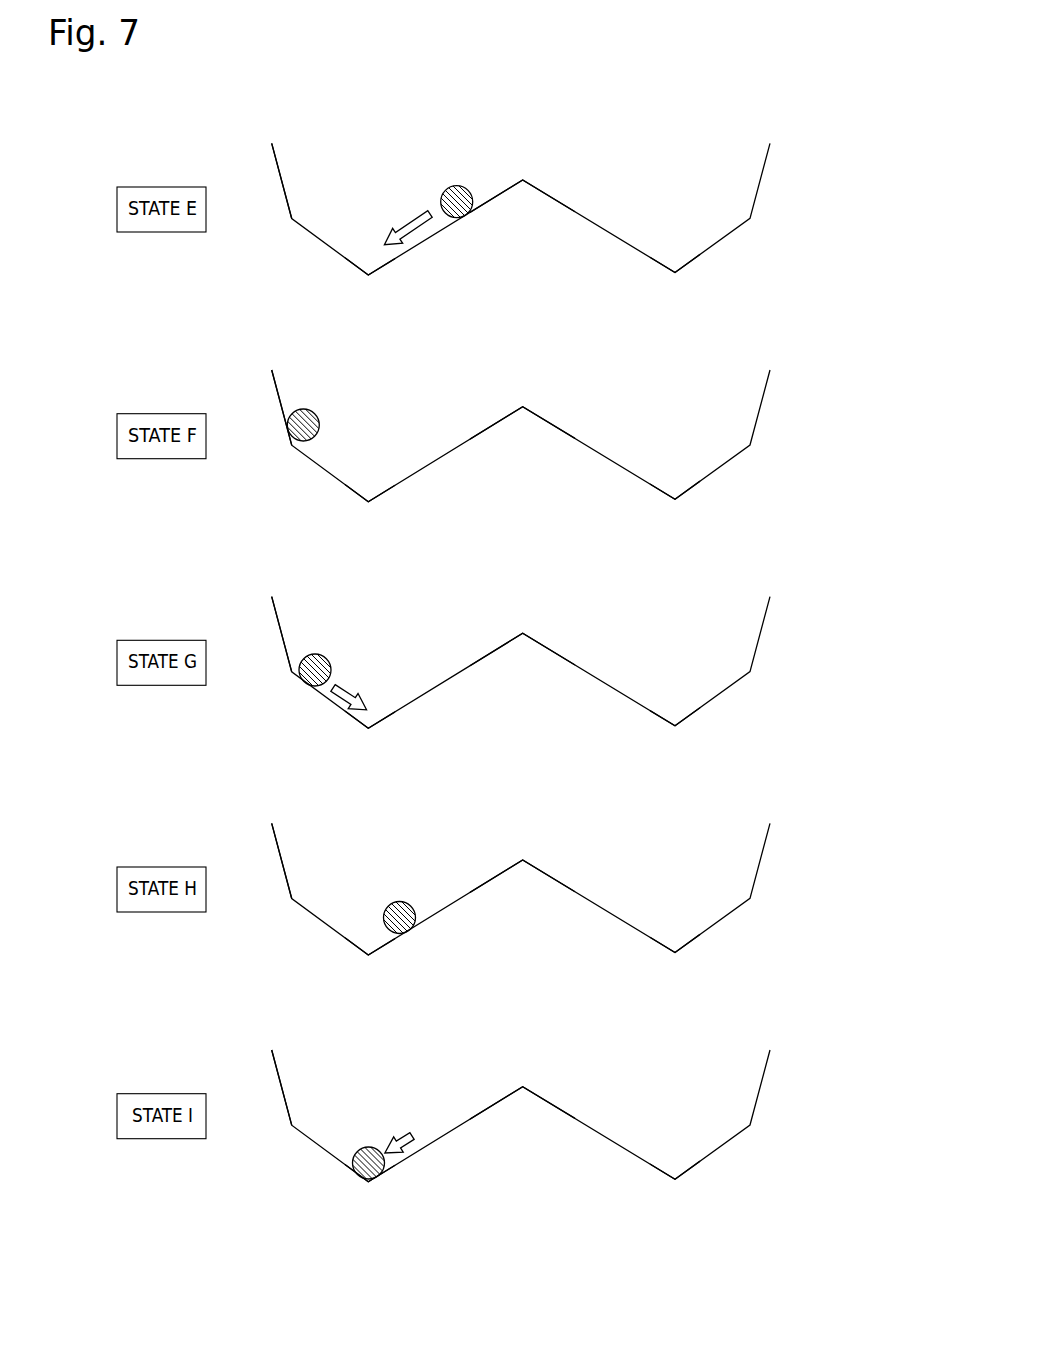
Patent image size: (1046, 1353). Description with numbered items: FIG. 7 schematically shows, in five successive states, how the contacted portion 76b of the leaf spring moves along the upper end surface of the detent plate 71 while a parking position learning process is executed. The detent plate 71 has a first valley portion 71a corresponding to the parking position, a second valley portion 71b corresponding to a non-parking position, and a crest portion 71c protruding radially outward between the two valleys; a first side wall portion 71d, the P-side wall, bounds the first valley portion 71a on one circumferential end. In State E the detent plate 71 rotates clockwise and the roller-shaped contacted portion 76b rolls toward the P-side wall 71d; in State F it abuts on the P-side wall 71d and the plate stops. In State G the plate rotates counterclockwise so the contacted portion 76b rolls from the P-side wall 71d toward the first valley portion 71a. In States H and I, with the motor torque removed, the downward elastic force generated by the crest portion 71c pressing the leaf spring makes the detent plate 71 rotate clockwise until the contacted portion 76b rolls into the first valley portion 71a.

The detent plate 71 is at (763, 167).
The first valley portion 71a is at (368, 257).
The second valley portion 71b is at (677, 255).
The crest portion 71c is at (498, 195).
The first side wall portion 71d is at (278, 165).
The contacted portion 76b is at (455, 186).